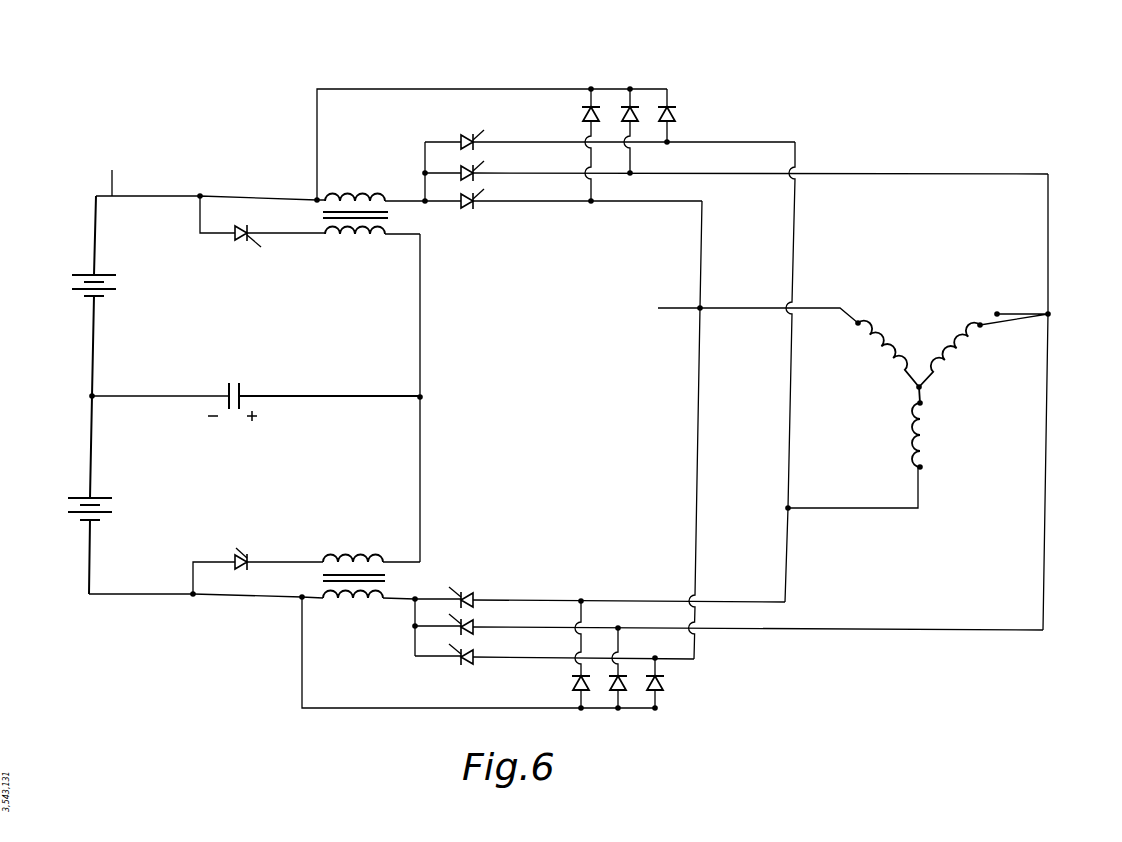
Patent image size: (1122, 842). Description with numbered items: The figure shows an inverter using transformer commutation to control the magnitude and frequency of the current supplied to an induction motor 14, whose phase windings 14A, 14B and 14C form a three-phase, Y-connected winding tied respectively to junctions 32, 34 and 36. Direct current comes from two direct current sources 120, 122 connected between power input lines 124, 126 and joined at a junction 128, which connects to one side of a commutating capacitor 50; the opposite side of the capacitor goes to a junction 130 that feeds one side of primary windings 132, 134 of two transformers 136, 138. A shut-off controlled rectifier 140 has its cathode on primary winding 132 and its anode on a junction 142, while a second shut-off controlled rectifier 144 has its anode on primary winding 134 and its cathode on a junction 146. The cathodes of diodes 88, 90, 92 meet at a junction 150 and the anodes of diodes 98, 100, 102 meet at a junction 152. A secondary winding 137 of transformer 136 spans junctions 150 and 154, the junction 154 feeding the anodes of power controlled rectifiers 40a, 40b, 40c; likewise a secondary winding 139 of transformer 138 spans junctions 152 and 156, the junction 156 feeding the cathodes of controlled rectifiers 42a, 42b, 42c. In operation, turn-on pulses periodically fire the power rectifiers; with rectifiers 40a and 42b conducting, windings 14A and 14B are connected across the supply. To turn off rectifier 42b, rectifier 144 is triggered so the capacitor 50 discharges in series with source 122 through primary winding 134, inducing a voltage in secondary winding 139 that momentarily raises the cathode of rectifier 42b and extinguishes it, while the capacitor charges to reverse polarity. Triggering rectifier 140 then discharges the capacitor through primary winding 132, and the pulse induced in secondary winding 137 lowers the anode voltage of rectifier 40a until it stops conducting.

The induction motor 14 is at (930, 379).
The phase winding 14A is at (875, 347).
The phase winding 14B is at (963, 345).
The phase winding 14C is at (928, 462).
The junction 32 is at (749, 430).
The junction 34 is at (1050, 312).
The junction 36 is at (786, 508).
The power controlled rectifier 40a is at (482, 207).
The power controlled rectifier 40b is at (482, 170).
The power controlled rectifier 40c is at (468, 138).
The controlled rectifier 42a is at (474, 656).
The controlled rectifier 42b is at (474, 625).
The controlled rectifier 42c is at (470, 596).
The commutating capacitor 50 is at (241, 383).
The diode 88 is at (676, 112).
The diode 90 is at (580, 110).
The diode 92 is at (634, 106).
The diode 98 is at (620, 698).
The diode 100 is at (575, 682).
The diode 102 is at (664, 683).
The direct current source 120 is at (112, 297).
The direct current source 122 is at (88, 497).
The power input line 124 is at (142, 174).
The power input line 126 is at (135, 596).
The junction 128 is at (91, 395).
The junction 130 is at (422, 397).
The primary winding 132 is at (358, 240).
The primary winding 134 is at (352, 559).
The transformer 136 is at (322, 214).
The secondary winding 137 is at (370, 196).
The transformer 138 is at (321, 578).
The secondary winding 139 is at (356, 601).
The shut-off controlled rectifier 140 is at (251, 243).
The junction 142 is at (200, 195).
The shut-off controlled rectifier 144 is at (247, 553).
The junction 146 is at (192, 592).
The junction 150 is at (316, 196).
The junction 152 is at (300, 599).
The junction 154 is at (426, 202).
The junction 156 is at (413, 602).